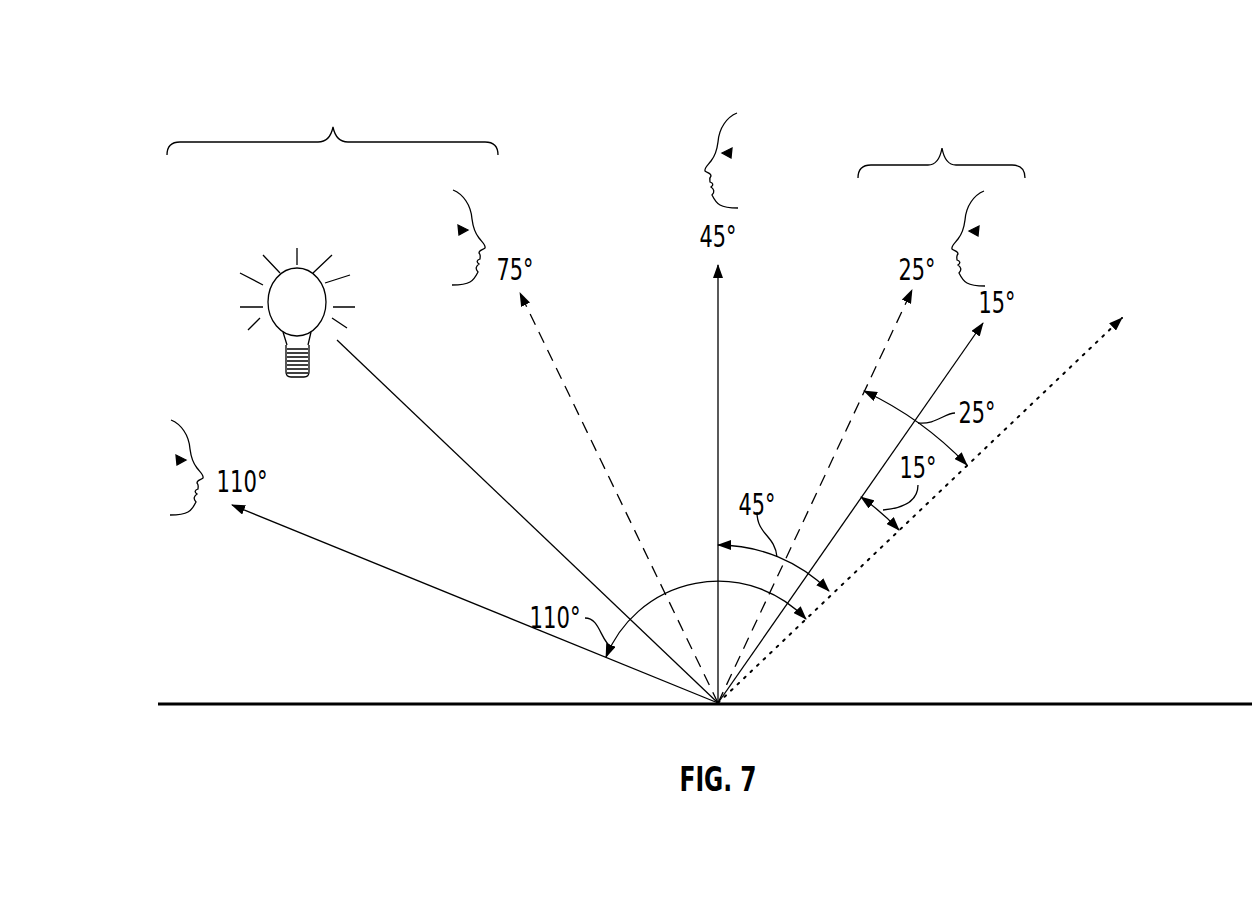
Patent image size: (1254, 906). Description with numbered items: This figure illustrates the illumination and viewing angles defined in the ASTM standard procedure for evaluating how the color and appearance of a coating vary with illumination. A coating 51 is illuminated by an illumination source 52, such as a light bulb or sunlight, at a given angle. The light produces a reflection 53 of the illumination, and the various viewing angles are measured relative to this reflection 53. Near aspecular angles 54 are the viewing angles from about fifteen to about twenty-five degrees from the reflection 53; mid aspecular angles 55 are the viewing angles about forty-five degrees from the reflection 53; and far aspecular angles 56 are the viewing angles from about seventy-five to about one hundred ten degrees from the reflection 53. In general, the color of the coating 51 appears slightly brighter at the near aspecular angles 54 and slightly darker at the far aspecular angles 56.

The coating 51 is at (1117, 705).
The illumination source 52 is at (268, 311).
The reflection of the illumination 53 is at (1030, 404).
The near aspecular angles 54 is at (941, 201).
The mid aspecular angles 55 is at (736, 95).
The far aspecular angles 56 is at (332, 189).